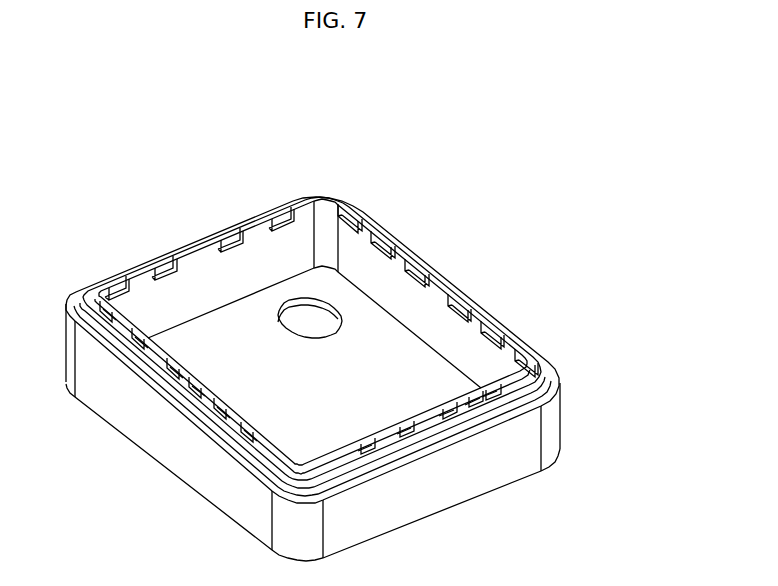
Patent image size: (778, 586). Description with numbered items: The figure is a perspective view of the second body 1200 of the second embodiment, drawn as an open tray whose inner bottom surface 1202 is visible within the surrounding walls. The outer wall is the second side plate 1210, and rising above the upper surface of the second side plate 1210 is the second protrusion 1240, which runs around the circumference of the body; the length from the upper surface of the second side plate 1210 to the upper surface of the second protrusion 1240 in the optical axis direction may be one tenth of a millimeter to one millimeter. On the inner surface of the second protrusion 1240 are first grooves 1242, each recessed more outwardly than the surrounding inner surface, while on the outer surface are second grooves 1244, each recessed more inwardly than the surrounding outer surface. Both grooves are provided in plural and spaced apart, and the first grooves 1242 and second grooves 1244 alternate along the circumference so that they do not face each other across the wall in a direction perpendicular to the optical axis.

The tray 1200 is at (131, 110).
The bottom surface of tray 1202 is at (248, 318).
The second side plate 1210 is at (559, 417).
The second protrusion 1240 is at (555, 365).
The first groove 1242 is at (417, 267).
The second groove 1244 is at (487, 410).